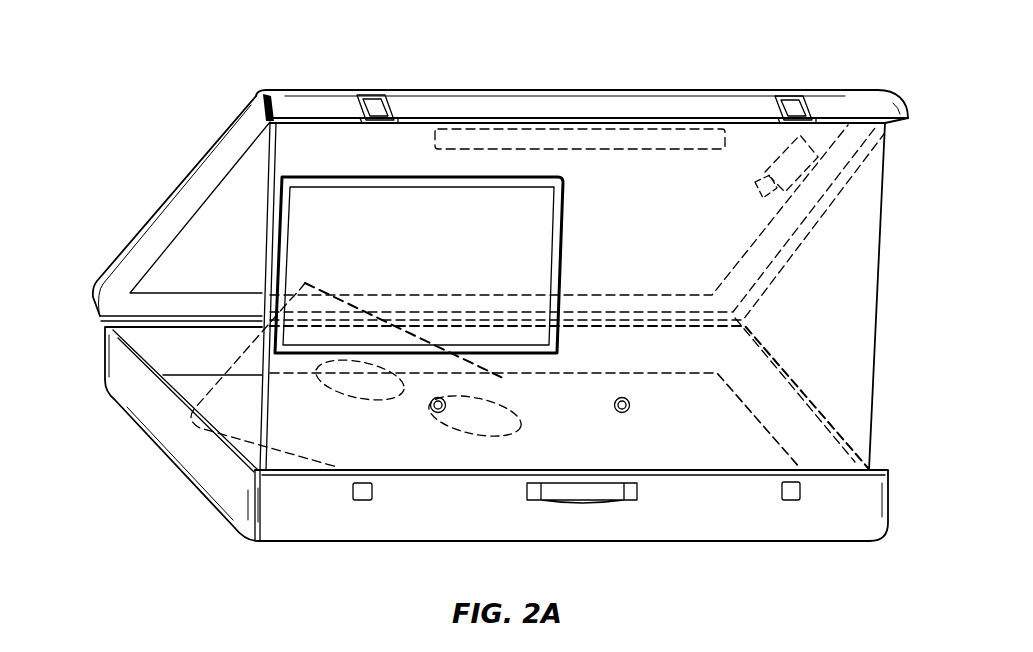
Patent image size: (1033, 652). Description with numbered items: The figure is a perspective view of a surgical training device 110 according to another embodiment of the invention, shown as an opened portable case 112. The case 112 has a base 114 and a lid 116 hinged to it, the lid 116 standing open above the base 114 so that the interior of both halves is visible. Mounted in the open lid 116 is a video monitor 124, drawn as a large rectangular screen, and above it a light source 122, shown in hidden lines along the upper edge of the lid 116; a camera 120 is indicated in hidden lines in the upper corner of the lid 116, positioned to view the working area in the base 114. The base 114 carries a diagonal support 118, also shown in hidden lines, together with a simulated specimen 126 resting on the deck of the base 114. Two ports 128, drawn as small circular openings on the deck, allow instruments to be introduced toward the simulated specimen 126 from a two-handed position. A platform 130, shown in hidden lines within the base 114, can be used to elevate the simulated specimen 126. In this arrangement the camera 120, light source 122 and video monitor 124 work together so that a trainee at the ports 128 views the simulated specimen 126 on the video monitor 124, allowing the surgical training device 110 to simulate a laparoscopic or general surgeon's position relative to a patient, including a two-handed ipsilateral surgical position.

The surgical training device 110 is at (688, 74).
The case 112 is at (103, 422).
The base 114 is at (190, 455).
The lid 116 is at (213, 162).
The diagonal support 118 is at (310, 465).
The camera 120 is at (802, 152).
The light source 122 is at (533, 133).
The video monitor 124 is at (305, 235).
The simulated specimen 126 is at (368, 402).
The ports 128 is at (433, 412).
The platform 130 is at (288, 420).